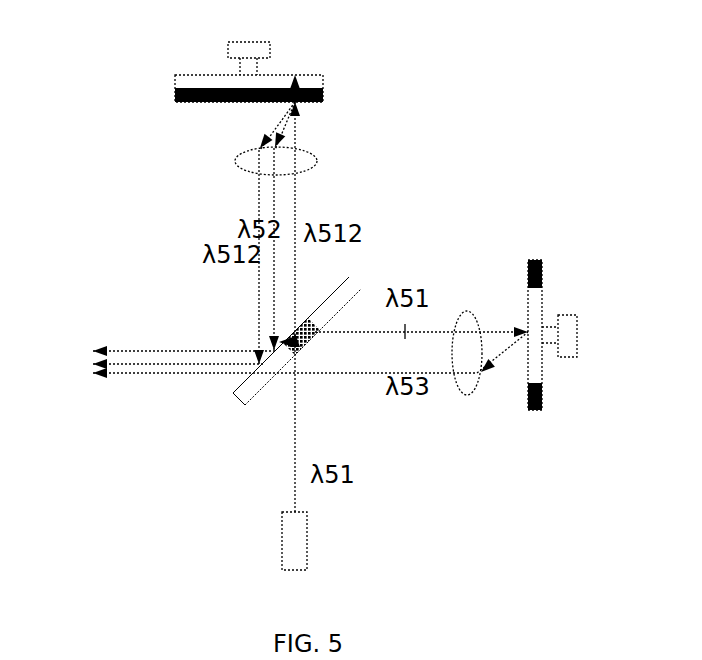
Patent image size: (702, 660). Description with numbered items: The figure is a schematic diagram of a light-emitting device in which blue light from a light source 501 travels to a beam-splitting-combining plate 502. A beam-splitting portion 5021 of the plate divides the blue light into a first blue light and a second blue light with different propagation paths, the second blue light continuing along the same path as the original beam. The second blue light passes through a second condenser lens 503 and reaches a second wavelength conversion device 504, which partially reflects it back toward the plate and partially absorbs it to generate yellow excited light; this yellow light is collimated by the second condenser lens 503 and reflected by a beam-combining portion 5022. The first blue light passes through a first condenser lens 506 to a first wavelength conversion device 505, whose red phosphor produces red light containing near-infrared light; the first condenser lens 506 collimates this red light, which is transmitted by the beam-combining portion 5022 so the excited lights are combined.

The light source 501 is at (290, 538).
The beam-splitting-combining plate 502 is at (292, 343).
The beam-splitting portion 5021 is at (278, 347).
The beam-combining portion 5022 is at (244, 392).
The second condenser lens 503 is at (235, 160).
The second wavelength conversion device 504 is at (177, 100).
The first wavelength conversion device 505 is at (537, 410).
The first condenser lens 506 is at (470, 395).